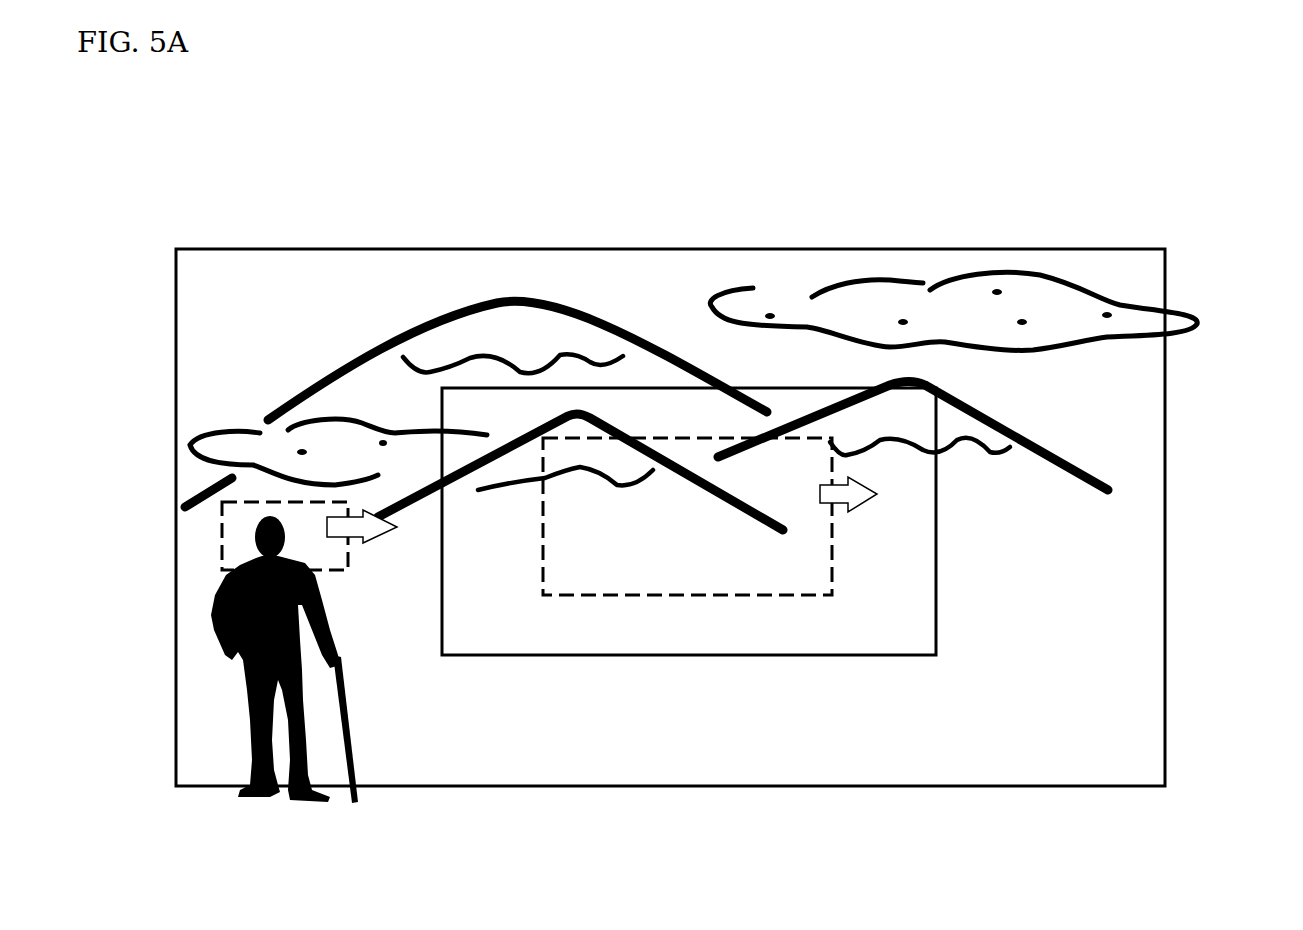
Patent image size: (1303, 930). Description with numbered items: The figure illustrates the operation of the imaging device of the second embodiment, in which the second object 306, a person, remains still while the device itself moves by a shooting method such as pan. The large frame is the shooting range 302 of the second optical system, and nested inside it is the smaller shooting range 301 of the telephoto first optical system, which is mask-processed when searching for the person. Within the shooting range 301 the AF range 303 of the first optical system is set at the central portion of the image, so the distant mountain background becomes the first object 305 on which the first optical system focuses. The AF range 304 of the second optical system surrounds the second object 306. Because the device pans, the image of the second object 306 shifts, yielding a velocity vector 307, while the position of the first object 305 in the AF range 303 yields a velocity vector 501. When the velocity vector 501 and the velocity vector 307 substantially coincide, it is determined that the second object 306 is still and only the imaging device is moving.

The shooting range of the first optical system 301 is at (557, 650).
The shooting range of the second optical system 302 is at (912, 786).
The AF range of the first optical system 303 is at (708, 440).
The AF range of the second optical system 304 is at (243, 503).
The first object 305 is at (603, 417).
The second object 306 is at (327, 745).
The velocity vector of the second object 307 is at (373, 525).
The velocity vector of the first object 501 is at (875, 495).